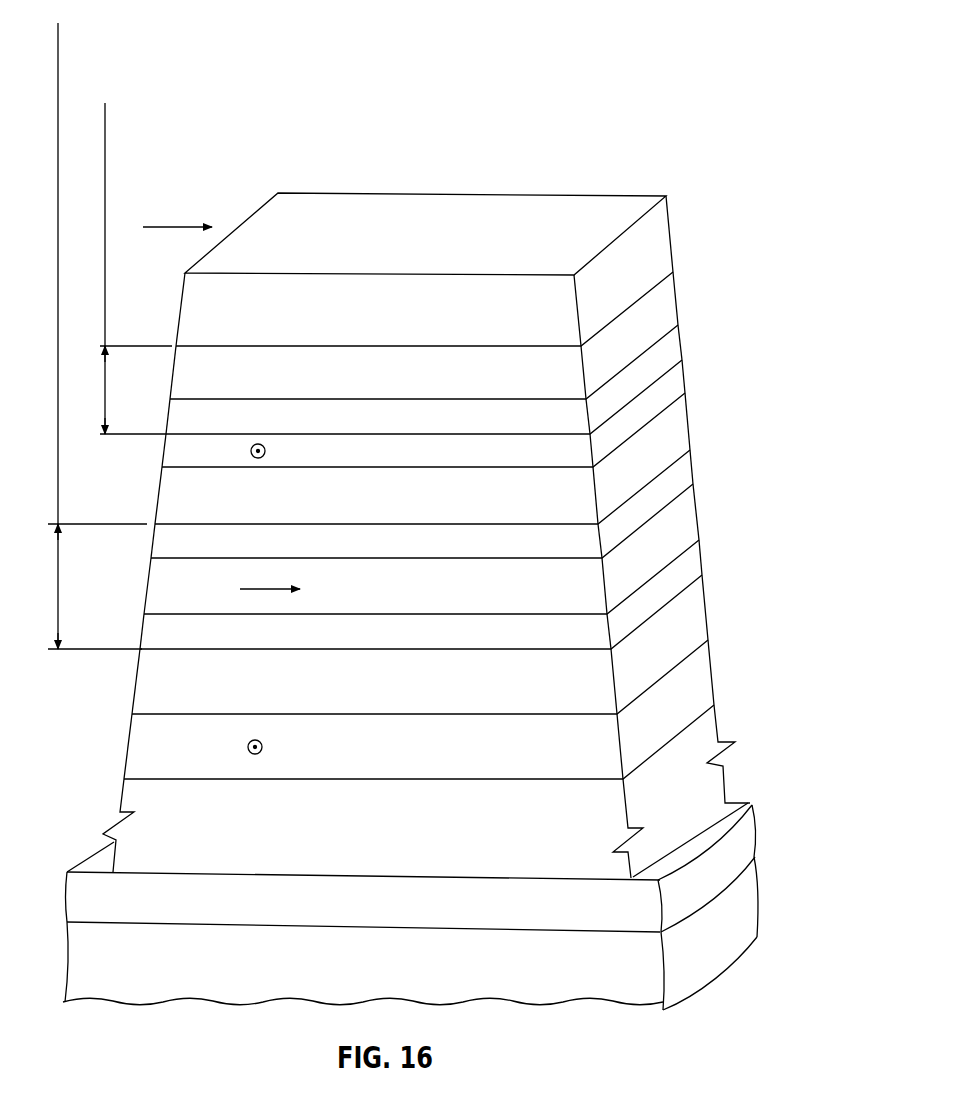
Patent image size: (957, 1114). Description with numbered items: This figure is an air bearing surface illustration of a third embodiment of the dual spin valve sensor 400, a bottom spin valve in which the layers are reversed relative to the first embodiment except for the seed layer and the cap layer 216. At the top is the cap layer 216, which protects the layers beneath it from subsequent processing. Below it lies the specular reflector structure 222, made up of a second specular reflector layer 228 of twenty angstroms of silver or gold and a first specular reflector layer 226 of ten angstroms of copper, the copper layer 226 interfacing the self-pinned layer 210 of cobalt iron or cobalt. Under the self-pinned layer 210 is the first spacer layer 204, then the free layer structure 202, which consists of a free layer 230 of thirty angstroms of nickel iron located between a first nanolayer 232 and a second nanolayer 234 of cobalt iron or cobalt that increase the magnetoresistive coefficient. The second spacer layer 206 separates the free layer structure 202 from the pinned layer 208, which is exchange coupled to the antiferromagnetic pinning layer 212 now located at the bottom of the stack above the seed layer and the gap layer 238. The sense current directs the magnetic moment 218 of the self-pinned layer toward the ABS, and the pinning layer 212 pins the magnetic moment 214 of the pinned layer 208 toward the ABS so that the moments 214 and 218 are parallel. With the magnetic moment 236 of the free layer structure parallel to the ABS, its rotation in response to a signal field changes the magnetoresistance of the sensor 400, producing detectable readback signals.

The spin valve sensor 400 is at (618, 173).
The cap layer 216 is at (663, 233).
The second specular reflector layer 228 is at (668, 302).
The first specular reflector layer 226 is at (675, 346).
The self-pinned layer 210 is at (678, 378).
The first spacer layer 204 is at (685, 425).
The first nanolayer 232 is at (690, 472).
The free layer 230 is at (692, 512).
The second nanolayer 234 is at (697, 563).
The second spacer layer 206 is at (700, 613).
The pinned layer 208 is at (707, 687).
The antiferromagnetic pinning layer 212 is at (713, 780).
The first gap layer 238 is at (700, 967).
The magnetic moment of the self-pinned layer 218 is at (258, 458).
The magnetic moment of the free layer structure 236 is at (260, 589).
The magnetic moment of the pinned layer 214 is at (248, 747).
The free layer structure 202 is at (58, 23).
The specular reflector structure 222 is at (105, 103).